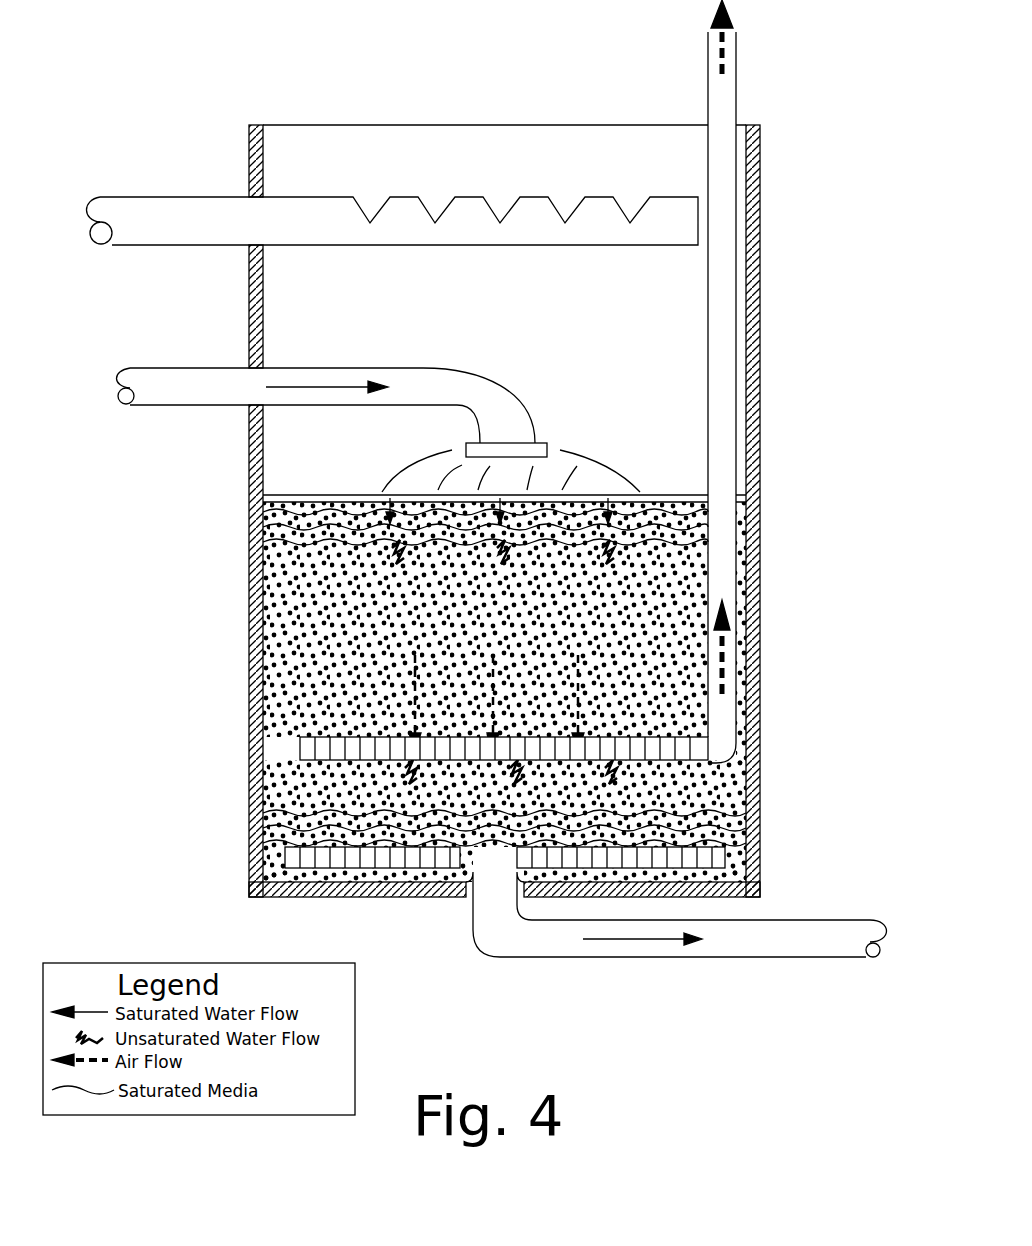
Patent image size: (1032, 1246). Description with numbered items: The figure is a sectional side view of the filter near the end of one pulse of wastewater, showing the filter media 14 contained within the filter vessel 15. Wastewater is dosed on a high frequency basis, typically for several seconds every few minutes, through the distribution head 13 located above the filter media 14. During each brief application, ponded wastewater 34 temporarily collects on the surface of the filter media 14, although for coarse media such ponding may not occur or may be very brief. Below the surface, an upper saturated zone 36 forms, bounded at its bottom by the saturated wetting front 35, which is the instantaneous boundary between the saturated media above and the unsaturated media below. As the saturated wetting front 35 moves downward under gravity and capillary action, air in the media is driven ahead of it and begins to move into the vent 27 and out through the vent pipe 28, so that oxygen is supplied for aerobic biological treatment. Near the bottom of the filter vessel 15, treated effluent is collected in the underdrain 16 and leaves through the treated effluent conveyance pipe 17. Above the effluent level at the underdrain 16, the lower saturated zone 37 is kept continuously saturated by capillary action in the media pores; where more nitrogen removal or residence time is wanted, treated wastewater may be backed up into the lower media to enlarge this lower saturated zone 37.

The distribution head 13 is at (505, 428).
The filter media 14 is at (278, 585).
The filter vessel 15 is at (253, 456).
The underdrain 16 is at (448, 872).
The treated effluent conveyance pipe 17 is at (763, 937).
The vent 27 is at (300, 740).
The vent pipe 28 is at (733, 88).
The ponded wastewater 34 is at (688, 497).
The saturated wetting front 35 is at (690, 548).
The upper saturated zone 36 is at (690, 515).
The lower saturated zone 37 is at (758, 800).